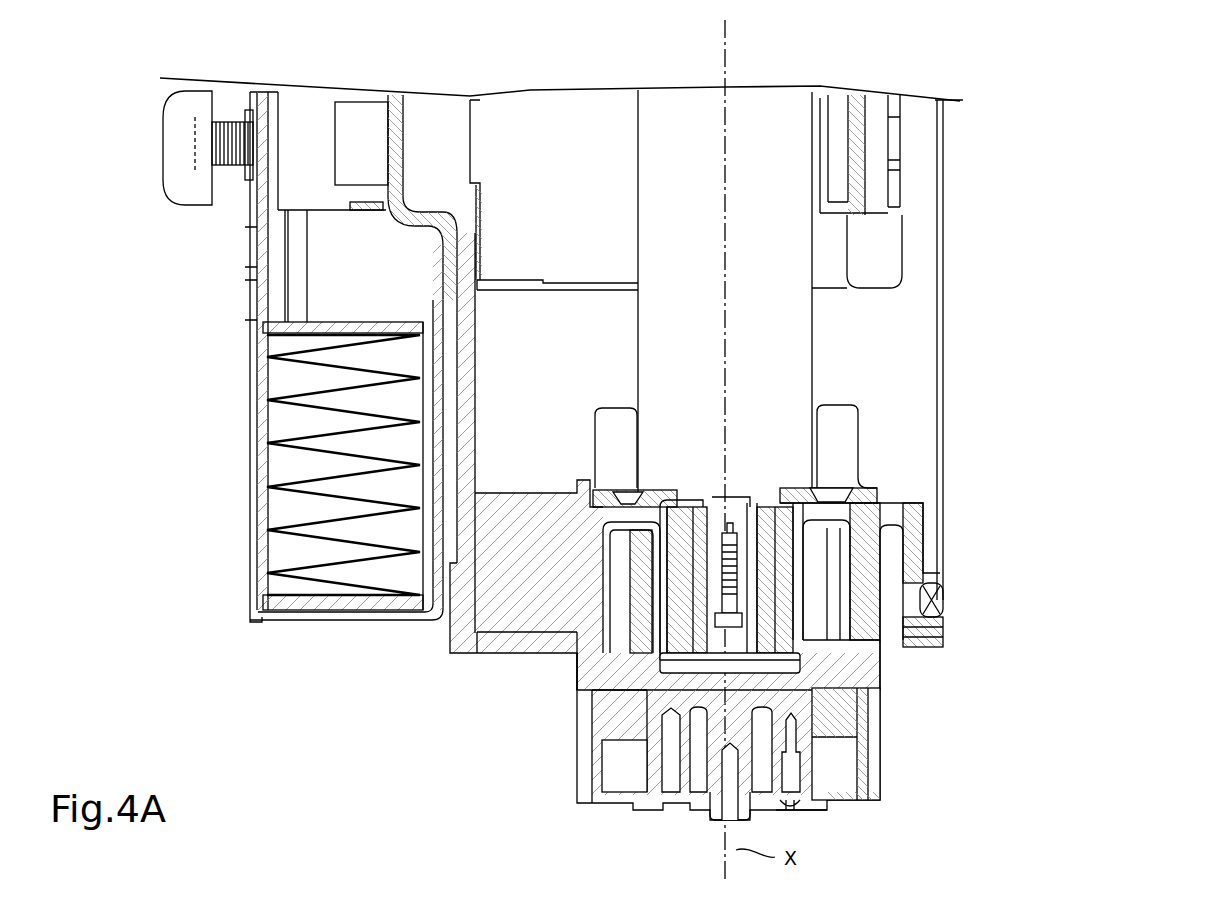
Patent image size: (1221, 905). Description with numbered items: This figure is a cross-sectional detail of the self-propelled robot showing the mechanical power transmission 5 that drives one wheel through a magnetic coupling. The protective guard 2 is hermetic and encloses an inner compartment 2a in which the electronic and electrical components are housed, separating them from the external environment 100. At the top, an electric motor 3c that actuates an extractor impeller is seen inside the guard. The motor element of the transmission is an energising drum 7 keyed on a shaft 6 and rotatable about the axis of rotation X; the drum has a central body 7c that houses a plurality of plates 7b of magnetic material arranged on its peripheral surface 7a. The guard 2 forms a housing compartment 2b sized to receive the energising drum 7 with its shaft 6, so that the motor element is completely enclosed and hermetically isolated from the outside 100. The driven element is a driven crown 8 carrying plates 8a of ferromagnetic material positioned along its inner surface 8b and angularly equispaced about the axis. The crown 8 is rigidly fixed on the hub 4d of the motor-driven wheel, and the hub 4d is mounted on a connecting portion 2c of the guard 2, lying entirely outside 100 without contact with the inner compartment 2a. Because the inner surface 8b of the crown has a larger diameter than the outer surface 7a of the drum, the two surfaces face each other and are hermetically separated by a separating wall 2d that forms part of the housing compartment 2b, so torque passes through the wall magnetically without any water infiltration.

The protective guard 2 is at (458, 654).
The inner compartment 2a is at (568, 133).
The housing compartment 2b is at (715, 682).
The connecting portion 2c is at (895, 766).
The separating wall 2d is at (657, 597).
The electric motor 3c is at (764, 88).
The hub 4d is at (815, 814).
The mechanical power transmission 5 is at (970, 663).
The shaft 6 is at (711, 582).
The energising drum 7 is at (797, 663).
The peripheral surface 7a is at (806, 612).
The plates 7b is at (761, 502).
The central body 7c is at (752, 562).
The driven crown 8 is at (615, 518).
The plates 8a is at (818, 552).
The inner surface 8b is at (656, 546).
The external environment 100 is at (1062, 177).